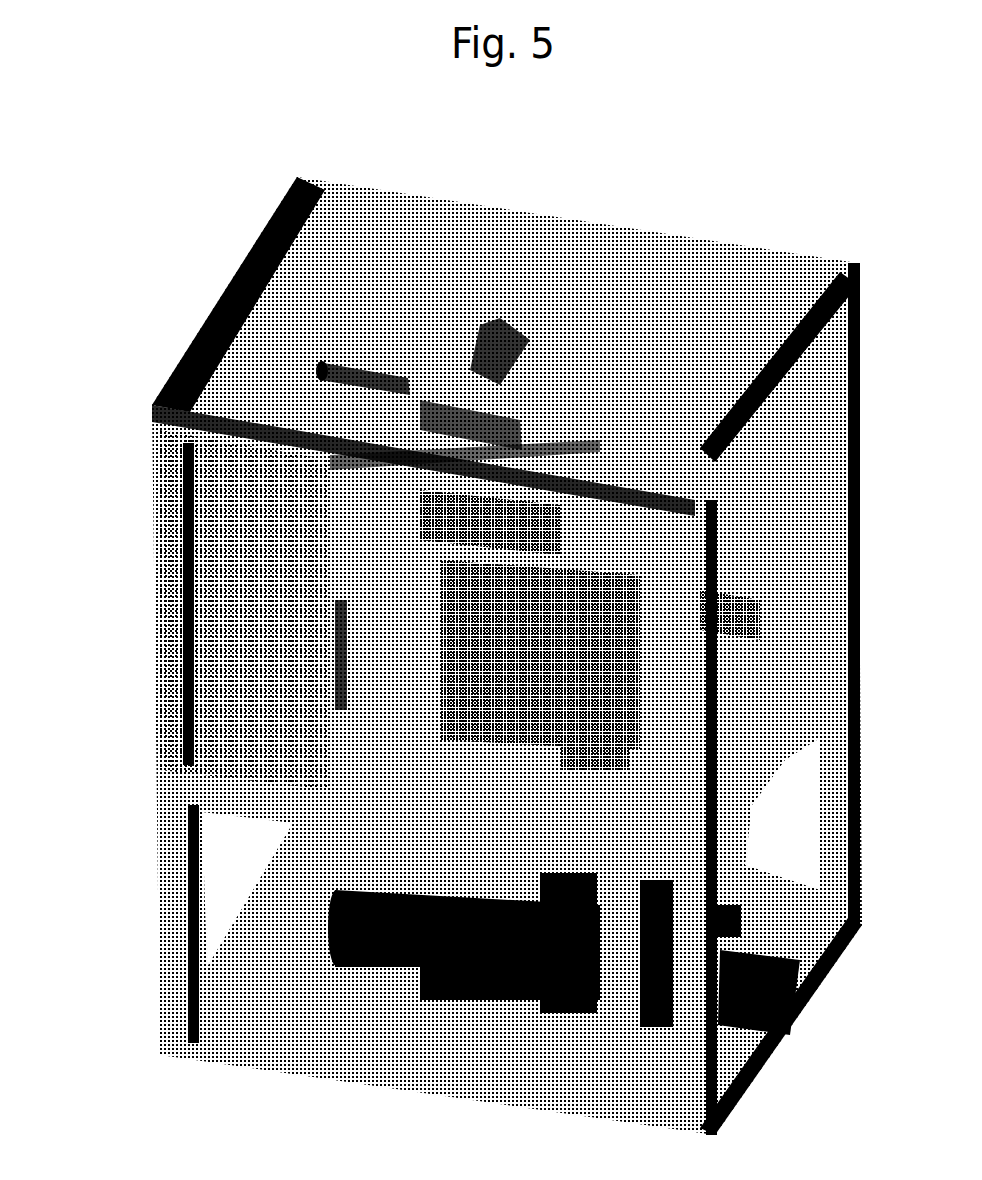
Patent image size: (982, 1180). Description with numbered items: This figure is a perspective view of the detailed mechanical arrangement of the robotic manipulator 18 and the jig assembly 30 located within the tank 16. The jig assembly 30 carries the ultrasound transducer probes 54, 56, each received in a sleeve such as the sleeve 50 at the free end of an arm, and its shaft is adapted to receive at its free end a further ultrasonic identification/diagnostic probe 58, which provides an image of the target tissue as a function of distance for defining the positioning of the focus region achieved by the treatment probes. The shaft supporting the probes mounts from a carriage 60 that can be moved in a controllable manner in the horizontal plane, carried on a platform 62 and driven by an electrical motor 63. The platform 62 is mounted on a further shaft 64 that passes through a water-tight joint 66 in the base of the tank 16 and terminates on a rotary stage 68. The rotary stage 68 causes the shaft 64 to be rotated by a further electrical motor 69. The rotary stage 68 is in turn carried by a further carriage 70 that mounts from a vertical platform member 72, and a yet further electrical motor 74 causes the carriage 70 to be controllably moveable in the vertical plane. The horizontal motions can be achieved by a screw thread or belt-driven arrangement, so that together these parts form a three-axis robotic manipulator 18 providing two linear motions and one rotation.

The tank 16 is at (204, 508).
The robotic manipulator 18 is at (232, 590).
The jig assembly 30 is at (530, 433).
The sleeve 50 is at (500, 440).
The ultrasound transducer probe 54 is at (418, 378).
The ultrasound transducer probe 56 is at (528, 345).
The ultrasonic identification/diagnostic probe 58 is at (450, 470).
The carriage 60 is at (495, 556).
The platform 62 is at (357, 650).
The electrical motor 63 is at (722, 610).
The shaft 64 is at (470, 778).
The water-tight joint 66 is at (585, 765).
The rotary stage 68 is at (445, 884).
The electrical motor 69 is at (360, 940).
The carriage 70 is at (590, 980).
The vertical platform member 72 is at (636, 967).
The electrical motor 74 is at (740, 870).